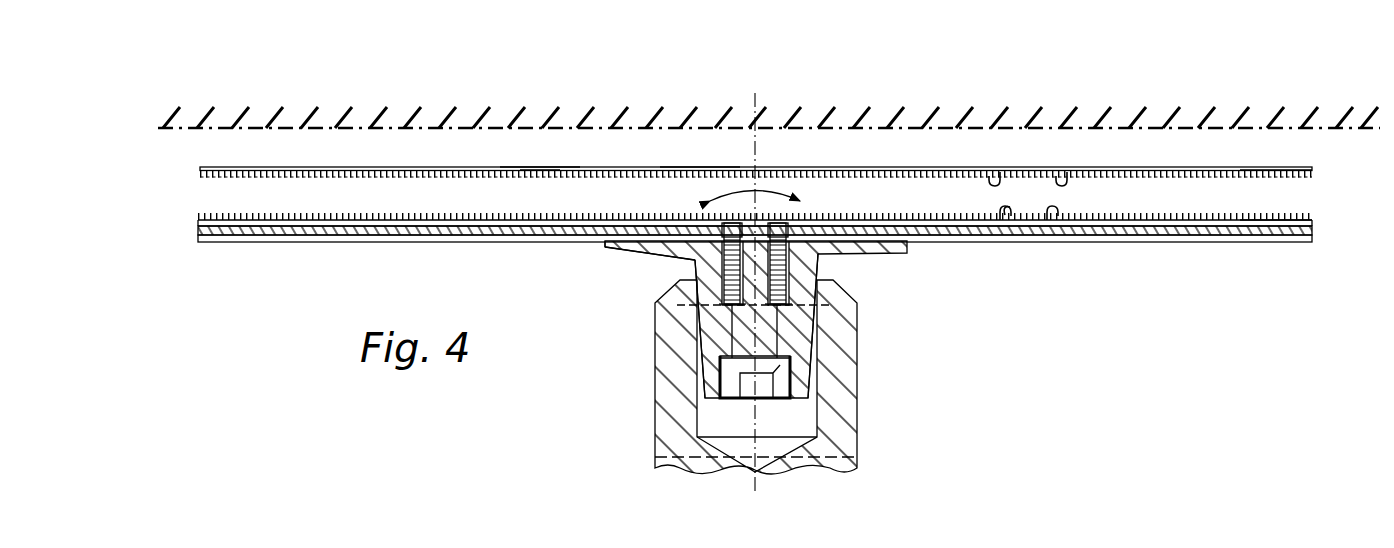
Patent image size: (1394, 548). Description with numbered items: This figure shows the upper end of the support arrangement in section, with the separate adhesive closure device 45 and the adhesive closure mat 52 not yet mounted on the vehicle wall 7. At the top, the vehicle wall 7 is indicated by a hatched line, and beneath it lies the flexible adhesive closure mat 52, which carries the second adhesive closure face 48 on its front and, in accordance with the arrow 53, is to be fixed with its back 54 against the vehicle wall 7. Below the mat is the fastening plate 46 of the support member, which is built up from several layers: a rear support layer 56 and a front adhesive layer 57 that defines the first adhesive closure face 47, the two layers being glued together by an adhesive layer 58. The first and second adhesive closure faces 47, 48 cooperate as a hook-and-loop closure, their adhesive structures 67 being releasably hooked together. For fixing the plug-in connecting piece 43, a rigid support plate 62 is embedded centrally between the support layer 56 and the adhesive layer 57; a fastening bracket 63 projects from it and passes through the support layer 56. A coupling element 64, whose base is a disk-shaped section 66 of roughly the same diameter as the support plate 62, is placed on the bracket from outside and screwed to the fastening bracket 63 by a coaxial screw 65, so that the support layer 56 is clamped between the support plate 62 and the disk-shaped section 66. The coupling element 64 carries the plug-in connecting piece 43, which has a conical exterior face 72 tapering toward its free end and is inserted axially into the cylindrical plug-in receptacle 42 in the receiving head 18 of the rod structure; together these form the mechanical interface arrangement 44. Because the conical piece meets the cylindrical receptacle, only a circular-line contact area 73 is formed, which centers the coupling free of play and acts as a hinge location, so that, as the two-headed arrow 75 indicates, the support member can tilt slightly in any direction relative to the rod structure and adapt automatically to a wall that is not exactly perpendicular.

The vehicle wall 7 is at (1213, 106).
The receiving head 18 is at (795, 377).
The plug-in receptacle 42 is at (812, 402).
The plug-in connecting piece 43 is at (795, 340).
The mechanical interface arrangement 44 is at (690, 352).
The adhesive closure device 45 is at (1280, 178).
The fastening plate 46 is at (1236, 245).
The first adhesive closure face 47 is at (996, 220).
The second adhesive closure face 48 is at (1000, 172).
The adhesive closure mat 52 is at (756, 119).
The arrow 53 is at (703, 160).
The back 54 is at (539, 158).
The support layer 56 is at (755, 180).
The adhesive layer 57 is at (1118, 213).
The adhesive layer 58 is at (1141, 242).
The support plate 62 is at (739, 225).
The fastening bracket 63 is at (787, 262).
The coupling element 64 is at (658, 265).
The coaxial screw 65 is at (727, 382).
The disk-shaped section 66 is at (620, 248).
The adhesive structures 67 is at (1067, 172).
The conical exterior face 72 is at (818, 362).
The contact area 73 is at (684, 291).
The two-headed arrow 75 is at (768, 192).